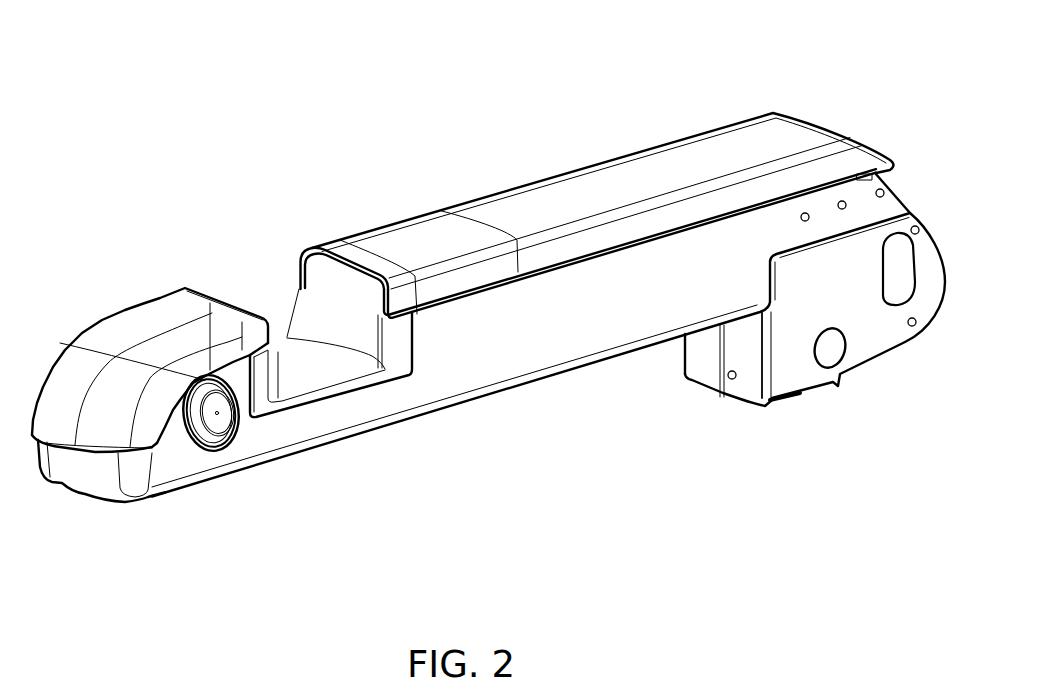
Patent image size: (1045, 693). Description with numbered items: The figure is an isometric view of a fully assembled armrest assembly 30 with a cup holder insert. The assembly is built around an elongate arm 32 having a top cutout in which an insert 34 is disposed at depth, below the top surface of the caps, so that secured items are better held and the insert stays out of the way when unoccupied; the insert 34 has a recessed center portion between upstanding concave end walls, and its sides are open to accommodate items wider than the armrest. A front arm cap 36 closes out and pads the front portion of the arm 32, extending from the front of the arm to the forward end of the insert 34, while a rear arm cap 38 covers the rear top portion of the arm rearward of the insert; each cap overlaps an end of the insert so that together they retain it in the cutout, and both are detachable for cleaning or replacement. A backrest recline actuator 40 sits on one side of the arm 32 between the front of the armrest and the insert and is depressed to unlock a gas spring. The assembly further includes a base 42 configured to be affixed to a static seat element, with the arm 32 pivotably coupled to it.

The armrest assembly 30 is at (148, 89).
The elongate arm 32 is at (477, 373).
The insert 34 is at (288, 363).
The front arm cap 36 is at (105, 324).
The rear arm cap 38 is at (615, 173).
The backrest recline actuator 40 is at (218, 422).
The base 42 is at (857, 358).